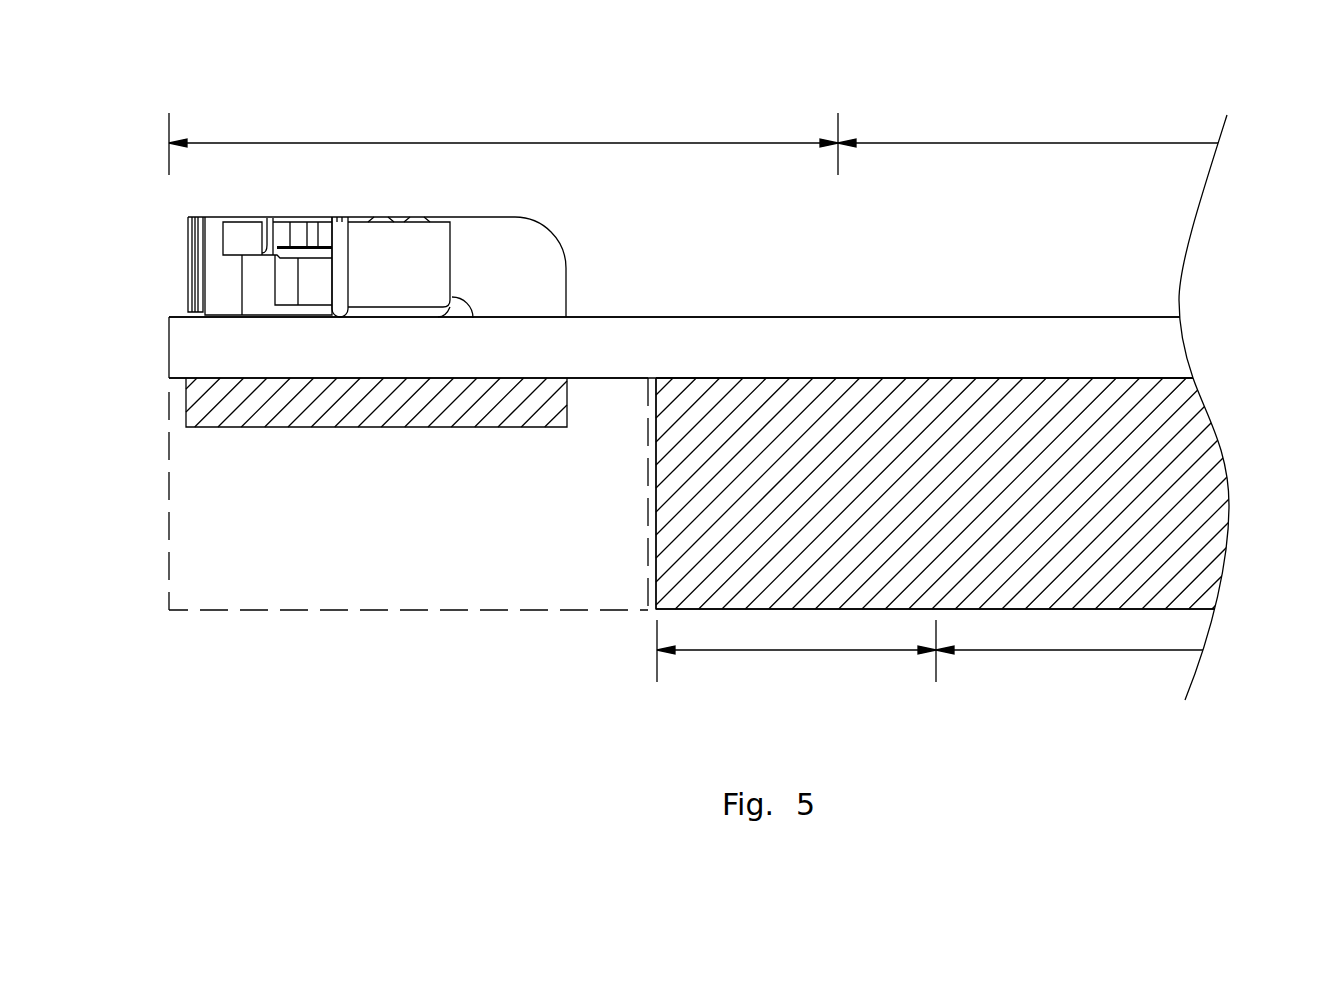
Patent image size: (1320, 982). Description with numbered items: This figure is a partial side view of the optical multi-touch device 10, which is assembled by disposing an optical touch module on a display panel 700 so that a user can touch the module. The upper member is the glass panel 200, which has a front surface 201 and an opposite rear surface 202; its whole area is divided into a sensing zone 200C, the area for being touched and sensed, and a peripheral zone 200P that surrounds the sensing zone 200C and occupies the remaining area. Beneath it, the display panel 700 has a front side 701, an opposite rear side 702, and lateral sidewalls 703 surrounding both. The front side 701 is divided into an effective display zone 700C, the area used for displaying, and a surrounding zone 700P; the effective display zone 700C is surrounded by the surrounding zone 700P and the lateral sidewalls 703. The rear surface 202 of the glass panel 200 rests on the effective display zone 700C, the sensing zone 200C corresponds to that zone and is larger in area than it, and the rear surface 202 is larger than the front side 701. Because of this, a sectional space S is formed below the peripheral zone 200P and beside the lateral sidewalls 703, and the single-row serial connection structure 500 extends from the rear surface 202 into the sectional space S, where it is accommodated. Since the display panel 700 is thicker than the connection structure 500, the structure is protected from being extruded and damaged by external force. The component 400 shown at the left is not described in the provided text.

The optical multi-touch device 10 is at (104, 69).
The glass panel 200 is at (702, 302).
The peripheral zone 200P is at (503, 143).
The sensing zone 200C is at (1036, 129).
The front surface 201 is at (898, 317).
The rear surface 202 is at (595, 378).
The connector 400 is at (164, 233).
The single-row serial connection structure 500 is at (171, 401).
The display panel 700 is at (1238, 495).
The surrounding zone 700P is at (796, 652).
The effective display zone 700C is at (1085, 665).
The front side 701 is at (1130, 378).
The rear side 702 is at (1112, 609).
The lateral sidewalls 703 is at (656, 545).
The sectional space S is at (410, 568).